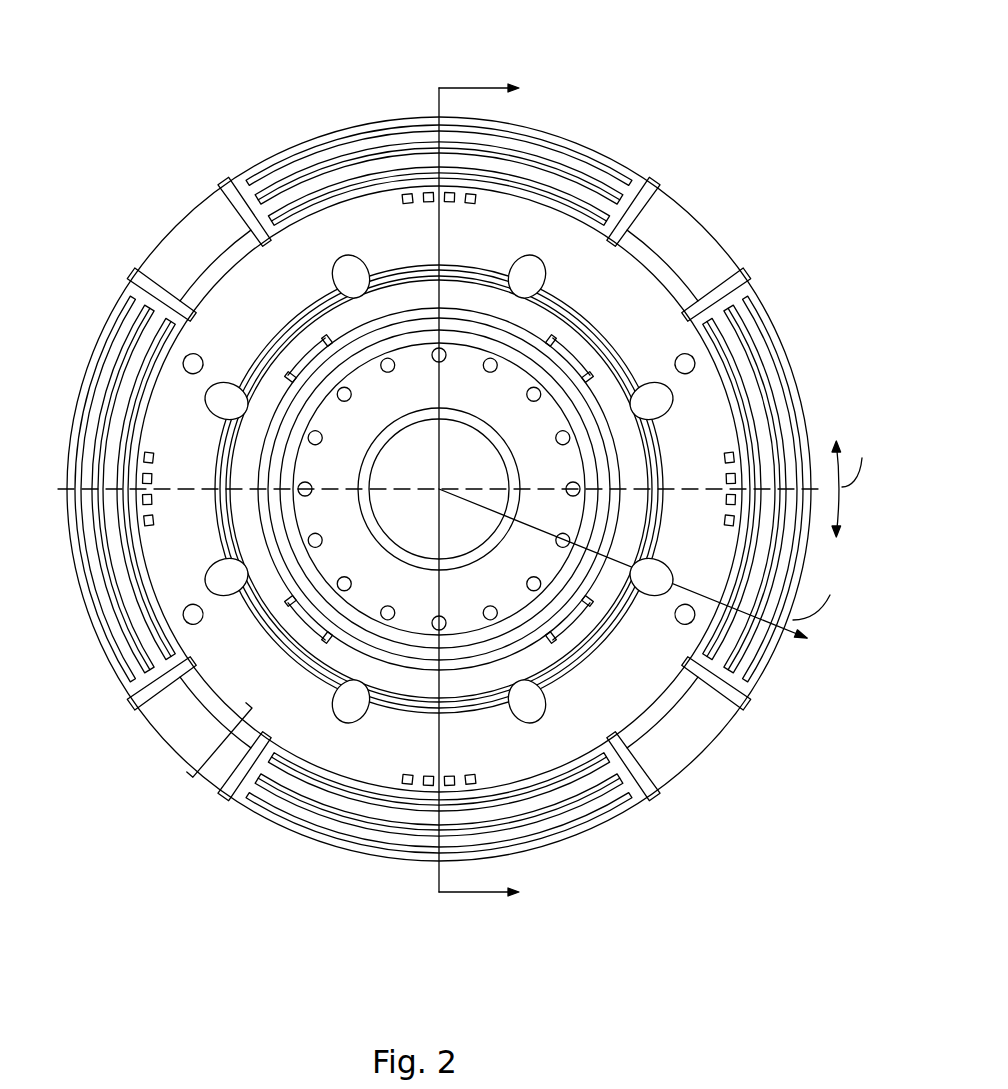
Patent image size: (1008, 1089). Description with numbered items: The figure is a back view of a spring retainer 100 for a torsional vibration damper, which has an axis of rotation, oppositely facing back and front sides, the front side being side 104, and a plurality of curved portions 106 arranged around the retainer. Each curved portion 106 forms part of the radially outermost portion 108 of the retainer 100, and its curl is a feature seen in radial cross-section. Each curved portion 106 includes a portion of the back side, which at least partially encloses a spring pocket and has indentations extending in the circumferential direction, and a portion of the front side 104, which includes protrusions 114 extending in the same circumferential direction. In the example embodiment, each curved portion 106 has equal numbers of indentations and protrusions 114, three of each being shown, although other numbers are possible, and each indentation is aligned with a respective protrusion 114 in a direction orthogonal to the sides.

The spring retainer 100 is at (688, 68).
The front side 104 is at (623, 300).
The curved portion 106 is at (602, 150).
The radially outermost portion 108 is at (213, 738).
The protrusion 114 is at (773, 346).